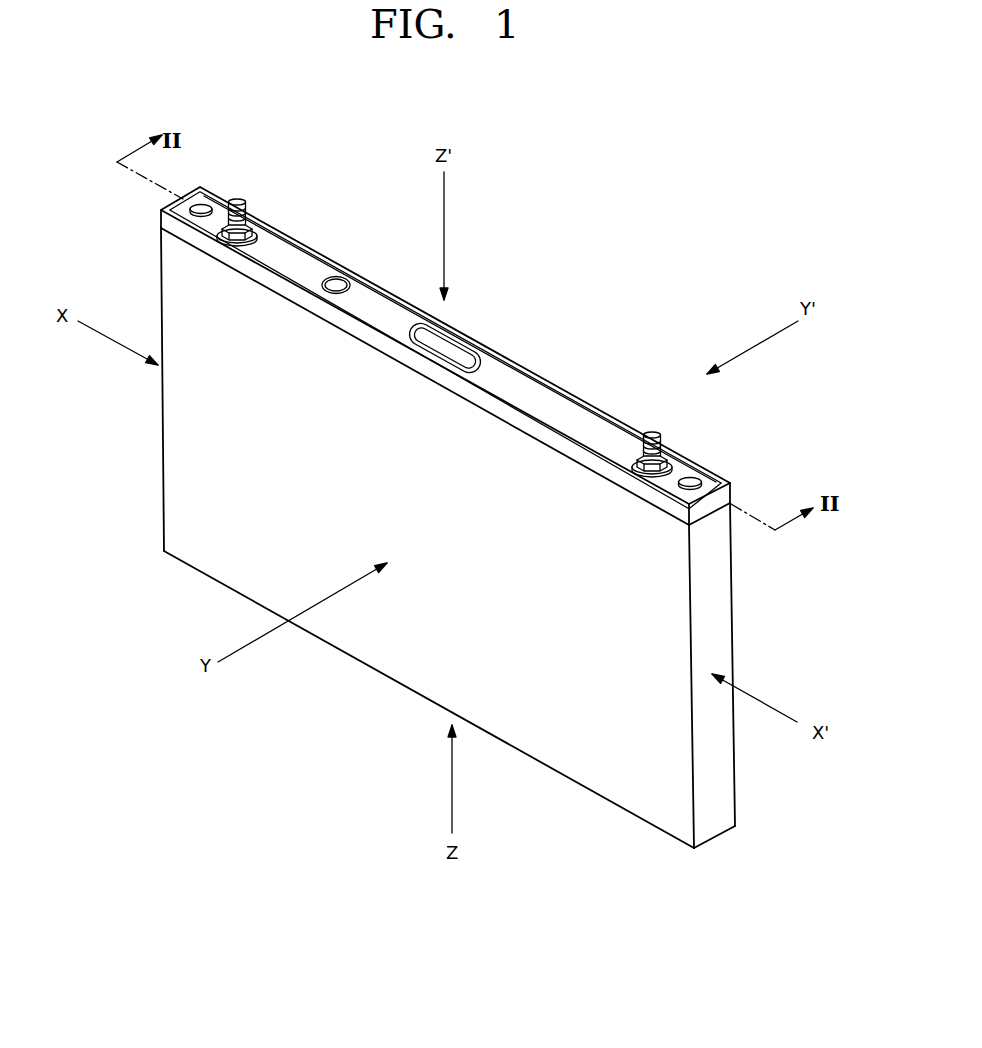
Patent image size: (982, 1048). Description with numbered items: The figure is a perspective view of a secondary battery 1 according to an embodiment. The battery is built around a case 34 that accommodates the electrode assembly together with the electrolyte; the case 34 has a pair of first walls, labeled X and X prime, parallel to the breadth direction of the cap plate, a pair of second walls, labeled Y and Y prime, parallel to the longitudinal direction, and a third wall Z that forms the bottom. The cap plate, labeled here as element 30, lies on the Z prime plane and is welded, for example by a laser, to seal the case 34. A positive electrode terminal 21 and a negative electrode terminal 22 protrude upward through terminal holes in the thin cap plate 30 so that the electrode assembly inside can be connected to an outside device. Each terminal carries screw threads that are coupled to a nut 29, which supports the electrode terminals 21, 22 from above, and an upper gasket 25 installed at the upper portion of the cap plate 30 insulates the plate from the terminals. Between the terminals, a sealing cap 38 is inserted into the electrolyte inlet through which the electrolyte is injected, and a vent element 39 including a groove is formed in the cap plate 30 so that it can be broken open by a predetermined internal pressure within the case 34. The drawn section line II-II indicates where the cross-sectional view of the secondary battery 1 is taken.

The secondary battery 1 is at (618, 322).
The positive electrode terminal 21 is at (236, 200).
The negative electrode terminal 22 is at (656, 436).
The upper gasket 25 is at (683, 476).
The nut 29 is at (673, 464).
The cap plate 30 is at (384, 309).
The case 34 is at (638, 783).
The sealing cap 38 is at (338, 283).
The vent element 39 is at (448, 347).